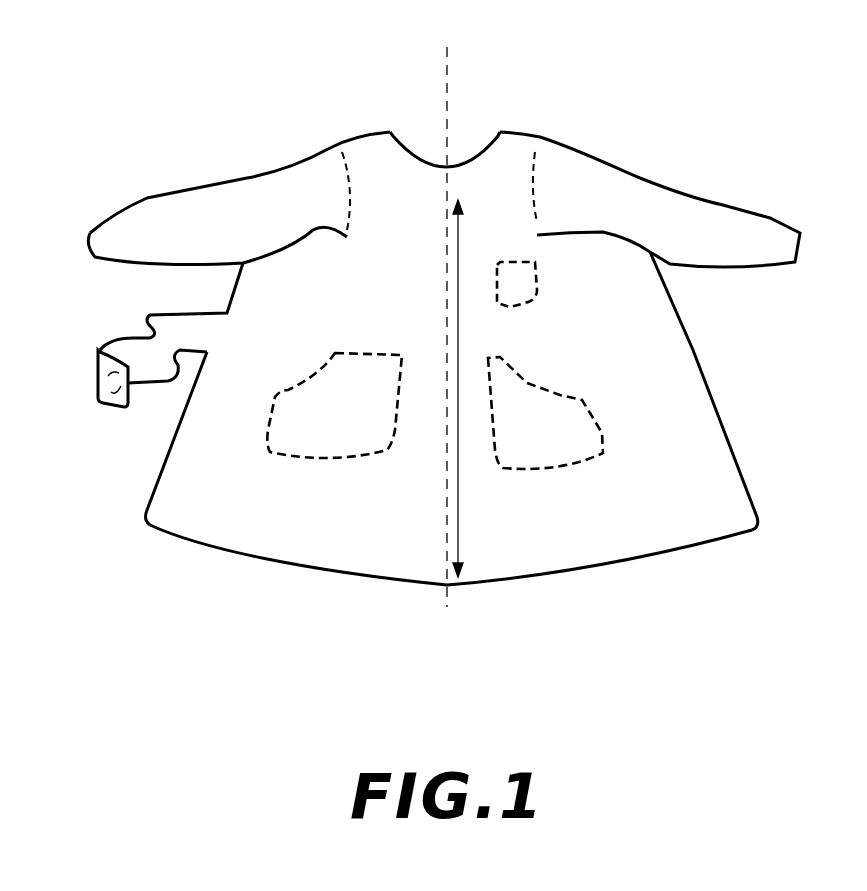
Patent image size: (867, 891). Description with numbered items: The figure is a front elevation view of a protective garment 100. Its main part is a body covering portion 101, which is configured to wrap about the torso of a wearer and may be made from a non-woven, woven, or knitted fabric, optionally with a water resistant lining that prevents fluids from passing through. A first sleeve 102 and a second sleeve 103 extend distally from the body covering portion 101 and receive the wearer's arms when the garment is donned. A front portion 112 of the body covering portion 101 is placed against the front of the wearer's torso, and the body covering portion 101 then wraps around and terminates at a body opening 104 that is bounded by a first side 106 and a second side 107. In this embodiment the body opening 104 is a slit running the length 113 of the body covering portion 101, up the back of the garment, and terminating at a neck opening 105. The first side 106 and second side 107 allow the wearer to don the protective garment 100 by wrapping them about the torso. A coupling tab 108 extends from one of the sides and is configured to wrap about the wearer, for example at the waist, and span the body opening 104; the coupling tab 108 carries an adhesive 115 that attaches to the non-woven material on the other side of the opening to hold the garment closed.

The protective garment 100 is at (230, 117).
The body covering portion 101 is at (493, 562).
The first sleeve 102 is at (642, 200).
The second sleeve 103 is at (255, 207).
The body opening 104 is at (160, 457).
The neck opening 105 is at (423, 147).
The first side 106 is at (230, 299).
The second side 107 is at (710, 388).
The coupling tab 108 is at (157, 370).
The front portion 112 is at (415, 310).
The length 113 is at (458, 468).
The adhesive 115 is at (100, 388).